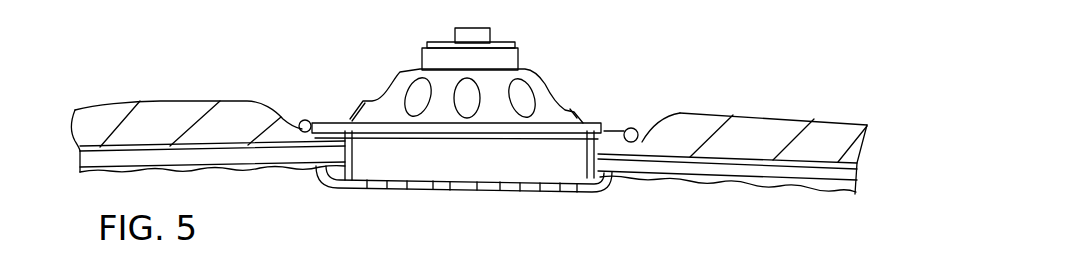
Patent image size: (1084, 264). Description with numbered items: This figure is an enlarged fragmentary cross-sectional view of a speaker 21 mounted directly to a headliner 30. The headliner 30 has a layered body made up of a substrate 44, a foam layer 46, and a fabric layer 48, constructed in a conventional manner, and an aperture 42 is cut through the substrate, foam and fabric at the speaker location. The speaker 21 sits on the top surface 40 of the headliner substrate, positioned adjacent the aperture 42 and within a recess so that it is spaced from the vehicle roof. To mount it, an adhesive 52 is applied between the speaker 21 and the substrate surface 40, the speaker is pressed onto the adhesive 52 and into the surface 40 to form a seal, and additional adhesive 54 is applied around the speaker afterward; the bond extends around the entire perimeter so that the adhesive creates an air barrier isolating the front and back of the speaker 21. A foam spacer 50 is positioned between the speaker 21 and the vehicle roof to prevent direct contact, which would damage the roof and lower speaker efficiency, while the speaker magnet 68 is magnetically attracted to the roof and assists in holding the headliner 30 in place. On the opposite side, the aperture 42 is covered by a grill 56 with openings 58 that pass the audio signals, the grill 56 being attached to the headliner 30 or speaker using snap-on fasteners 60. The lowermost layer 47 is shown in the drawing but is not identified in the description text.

The speaker 21 is at (543, 82).
The headliner 30 is at (871, 127).
The top surface 40 is at (797, 122).
The aperture 42 is at (378, 163).
The substrate 44 is at (856, 161).
The foam layer 46 is at (853, 186).
The adhesive layer 47 is at (750, 185).
The fabric layer 48 is at (658, 132).
The spacer 50 is at (482, 30).
The adhesive 52 is at (315, 122).
The additional adhesive 54 is at (303, 119).
The grill 56 is at (612, 184).
The openings 58 is at (520, 182).
The snap-on fasteners 60 is at (350, 158).
The speaker magnet 68 is at (422, 55).